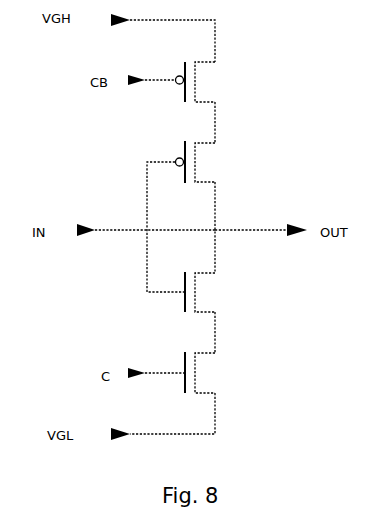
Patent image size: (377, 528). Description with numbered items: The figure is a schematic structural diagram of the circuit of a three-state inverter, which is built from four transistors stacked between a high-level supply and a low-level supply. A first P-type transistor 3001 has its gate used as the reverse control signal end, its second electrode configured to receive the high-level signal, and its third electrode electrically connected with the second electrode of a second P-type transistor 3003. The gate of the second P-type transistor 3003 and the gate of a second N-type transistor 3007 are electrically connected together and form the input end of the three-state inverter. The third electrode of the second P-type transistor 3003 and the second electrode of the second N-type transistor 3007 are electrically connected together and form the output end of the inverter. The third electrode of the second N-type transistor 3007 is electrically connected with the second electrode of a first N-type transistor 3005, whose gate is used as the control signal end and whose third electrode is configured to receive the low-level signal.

The first P-type transistor 3001 is at (218, 82).
The second P-type transistor 3003 is at (225, 165).
The second N-type transistor 3007 is at (220, 300).
The first N-type transistor 3005 is at (220, 380).